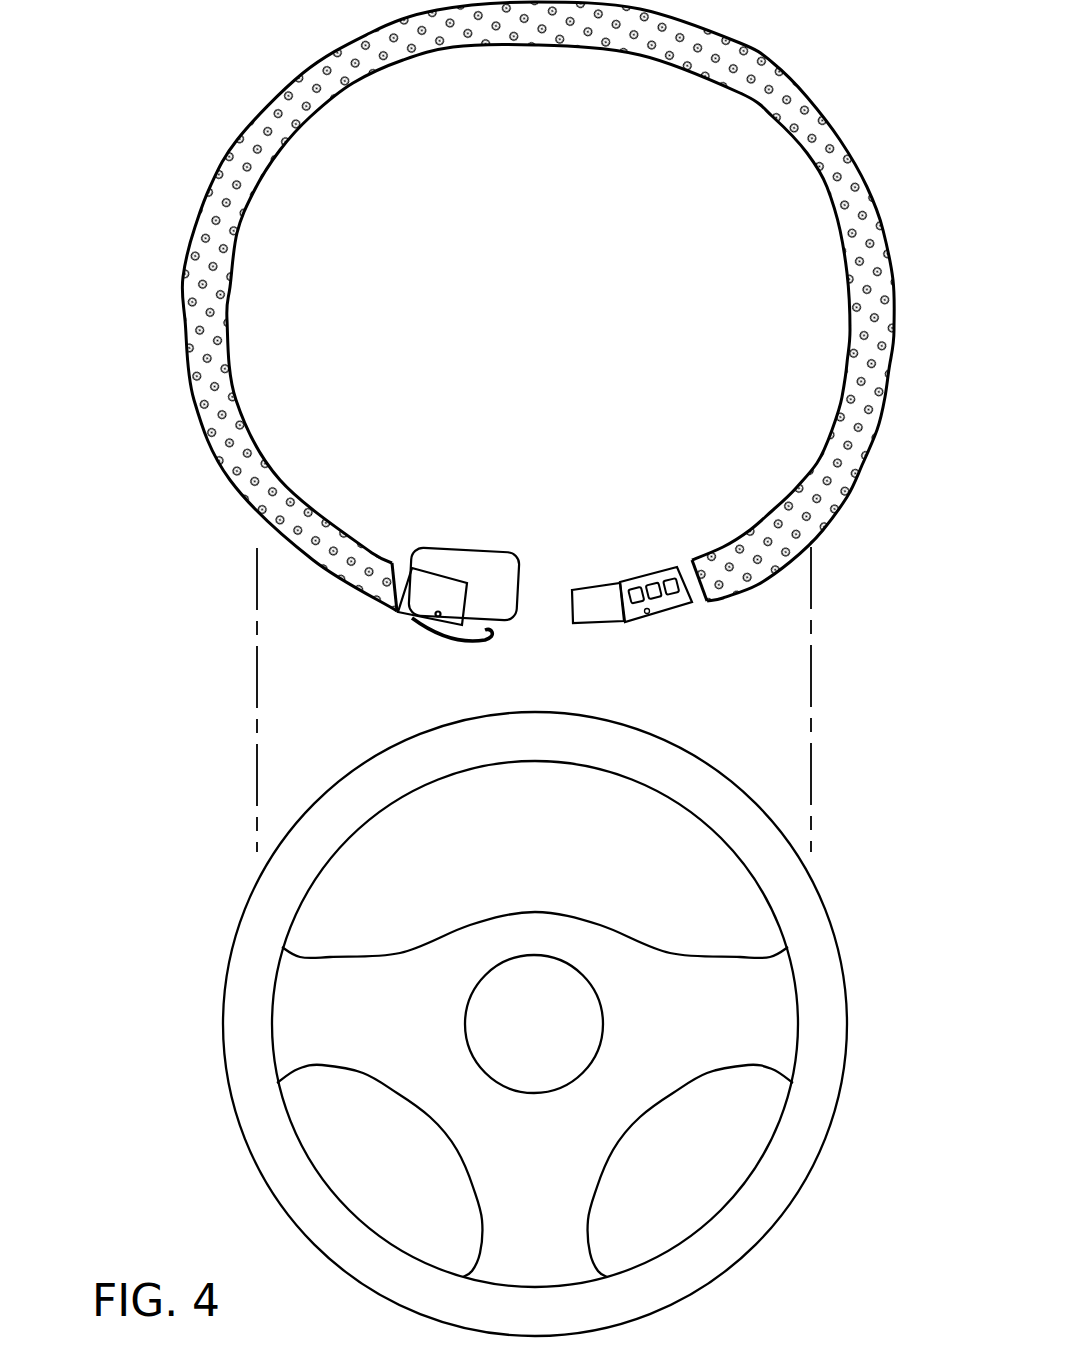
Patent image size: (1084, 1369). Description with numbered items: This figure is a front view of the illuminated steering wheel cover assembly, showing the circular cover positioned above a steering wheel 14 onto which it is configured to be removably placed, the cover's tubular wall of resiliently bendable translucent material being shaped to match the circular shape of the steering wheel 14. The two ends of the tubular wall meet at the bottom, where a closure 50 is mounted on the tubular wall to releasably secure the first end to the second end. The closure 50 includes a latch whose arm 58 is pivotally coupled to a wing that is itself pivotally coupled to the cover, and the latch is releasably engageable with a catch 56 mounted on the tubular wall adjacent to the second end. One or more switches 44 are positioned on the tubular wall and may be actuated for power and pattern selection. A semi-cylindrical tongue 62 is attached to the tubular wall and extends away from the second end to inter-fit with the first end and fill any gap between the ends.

The steering wheel 14 is at (826, 949).
The switch 44 is at (653, 583).
The closure 50 is at (513, 637).
The catch 56 is at (649, 614).
The arm 58 is at (452, 636).
The tongue 62 is at (592, 597).